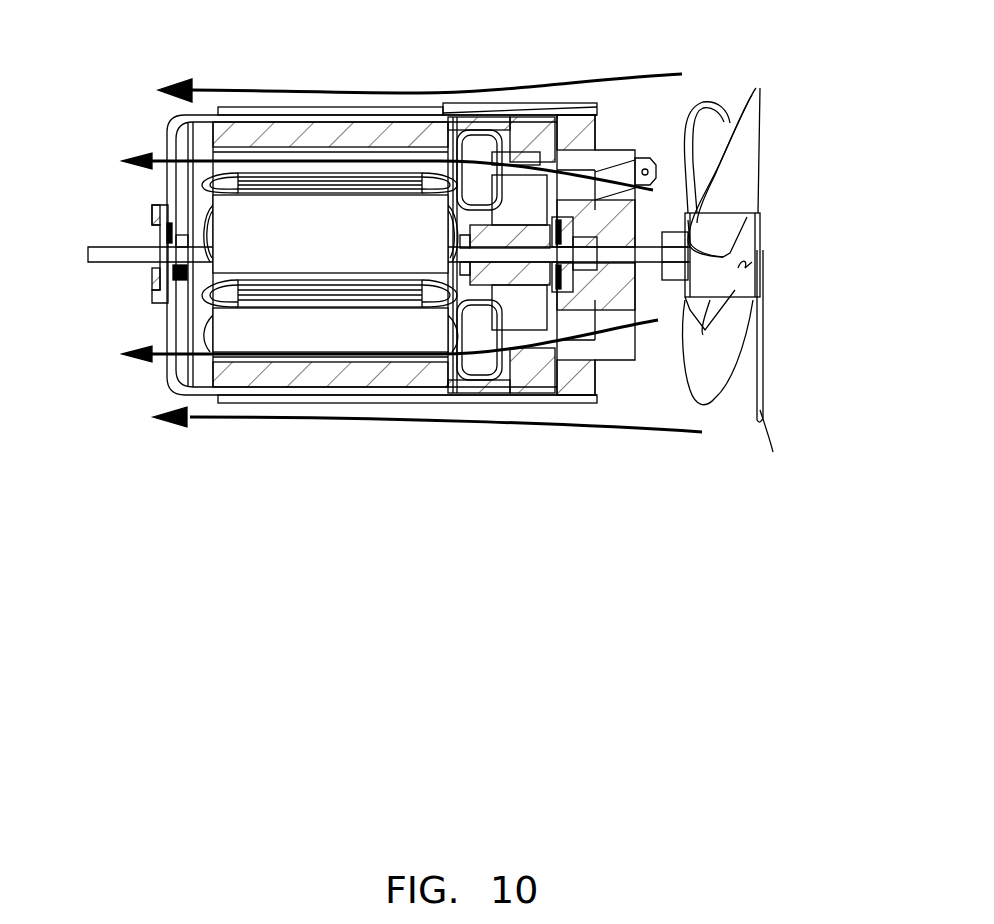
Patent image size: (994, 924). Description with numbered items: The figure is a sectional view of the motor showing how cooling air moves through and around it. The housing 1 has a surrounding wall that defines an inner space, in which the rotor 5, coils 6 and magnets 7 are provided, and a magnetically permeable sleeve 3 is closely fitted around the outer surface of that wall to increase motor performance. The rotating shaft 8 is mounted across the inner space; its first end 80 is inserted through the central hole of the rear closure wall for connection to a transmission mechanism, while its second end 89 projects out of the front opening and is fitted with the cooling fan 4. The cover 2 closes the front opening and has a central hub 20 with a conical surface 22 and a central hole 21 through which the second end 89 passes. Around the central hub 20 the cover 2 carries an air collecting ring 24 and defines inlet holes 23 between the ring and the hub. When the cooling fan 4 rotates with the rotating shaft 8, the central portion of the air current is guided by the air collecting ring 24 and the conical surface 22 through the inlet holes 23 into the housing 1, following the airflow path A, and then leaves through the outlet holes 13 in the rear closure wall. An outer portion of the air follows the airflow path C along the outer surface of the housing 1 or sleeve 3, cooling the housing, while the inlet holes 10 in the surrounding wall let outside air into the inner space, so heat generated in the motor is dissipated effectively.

The housing 1 is at (212, 396).
The cover 2 is at (580, 384).
The magnetically permeable sleeve 3 is at (272, 402).
The cooling fan 4 is at (765, 412).
The rotor 5 is at (250, 326).
The coils 6 is at (187, 281).
The magnets 7 is at (324, 382).
The rotating shaft 8 is at (187, 222).
The inlet holes 10 is at (470, 140).
The outlet holes 13 is at (170, 155).
The central hub 20 is at (688, 214).
The central hole 21 is at (688, 232).
The conical surface 22 is at (688, 304).
The inlet holes 23 is at (588, 150).
The air collecting ring 24 is at (632, 385).
The first end 80 is at (122, 253).
The second end 89 is at (640, 258).
The airflow path A is at (668, 254).
The airflow path C is at (438, 252).